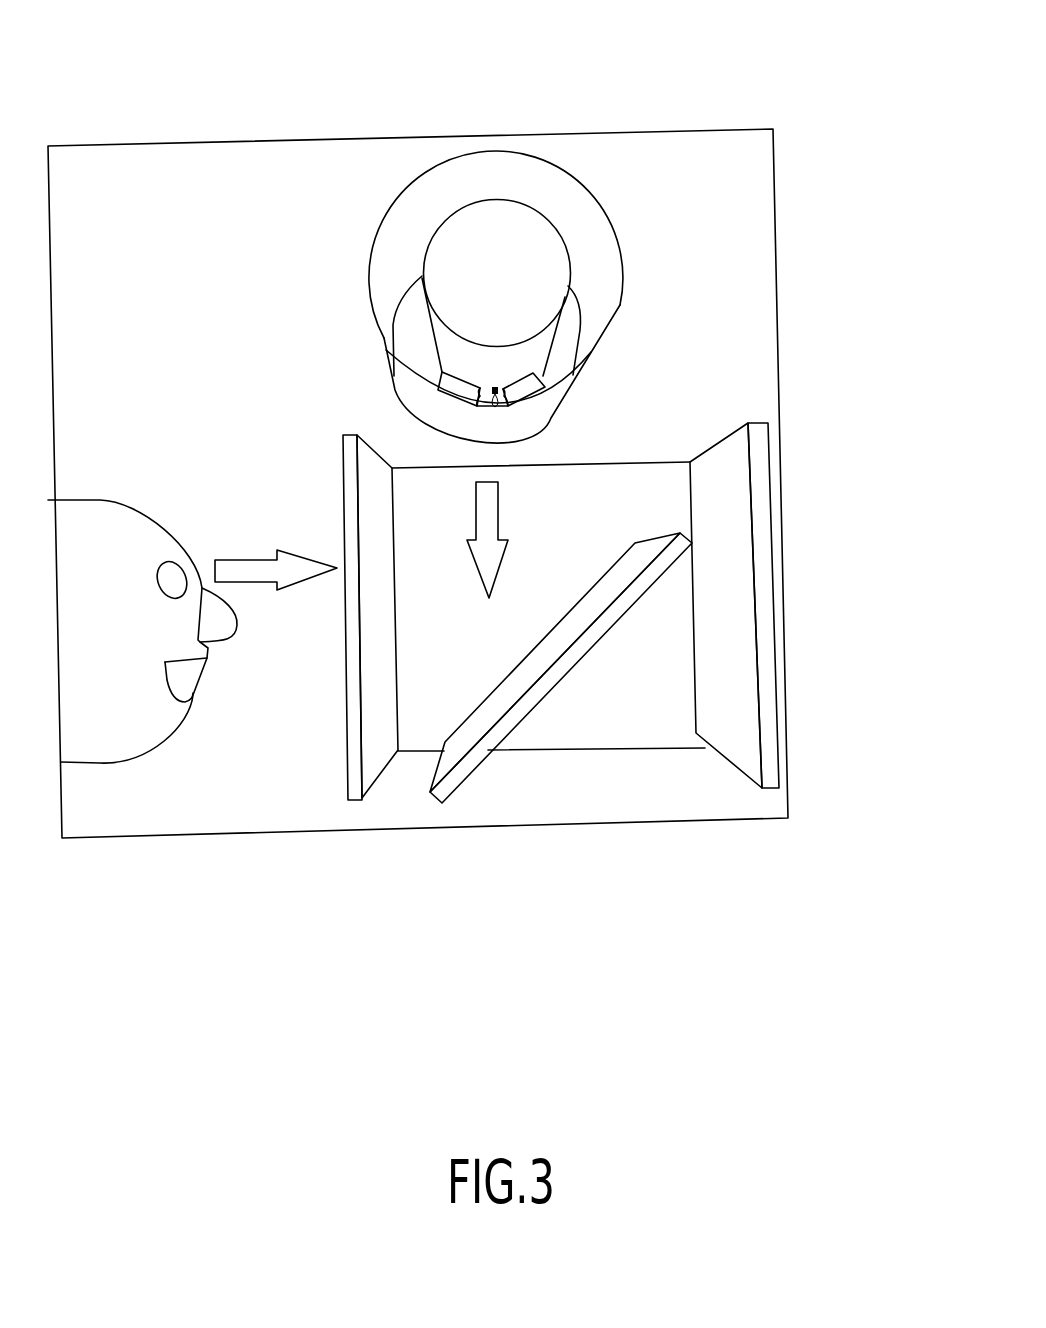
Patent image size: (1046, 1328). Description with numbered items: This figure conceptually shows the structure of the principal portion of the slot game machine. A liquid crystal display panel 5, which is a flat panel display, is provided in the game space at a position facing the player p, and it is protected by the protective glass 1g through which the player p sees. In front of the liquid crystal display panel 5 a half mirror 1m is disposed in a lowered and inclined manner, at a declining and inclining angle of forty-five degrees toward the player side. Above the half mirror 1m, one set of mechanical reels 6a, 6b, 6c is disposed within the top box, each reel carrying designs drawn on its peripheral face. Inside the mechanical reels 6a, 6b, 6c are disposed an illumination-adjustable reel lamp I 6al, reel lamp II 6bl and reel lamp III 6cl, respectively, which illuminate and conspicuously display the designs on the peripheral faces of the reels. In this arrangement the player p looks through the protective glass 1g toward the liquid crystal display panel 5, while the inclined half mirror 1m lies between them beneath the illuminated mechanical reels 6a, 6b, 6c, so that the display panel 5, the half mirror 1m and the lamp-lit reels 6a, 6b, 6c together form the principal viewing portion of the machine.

The mechanical reel 6a is at (567, 168).
The mechanical reel 6b is at (601, 51).
The mechanical reel 6c is at (608, 249).
The reel lamp I 6al is at (517, 377).
The reel lamp II 6bl is at (848, 339).
The reel lamp III 6cl is at (616, 341).
The player p is at (95, 515).
The protective glass 1g is at (343, 507).
The half mirror 1m is at (503, 683).
The liquid crystal display panel 5 is at (713, 639).